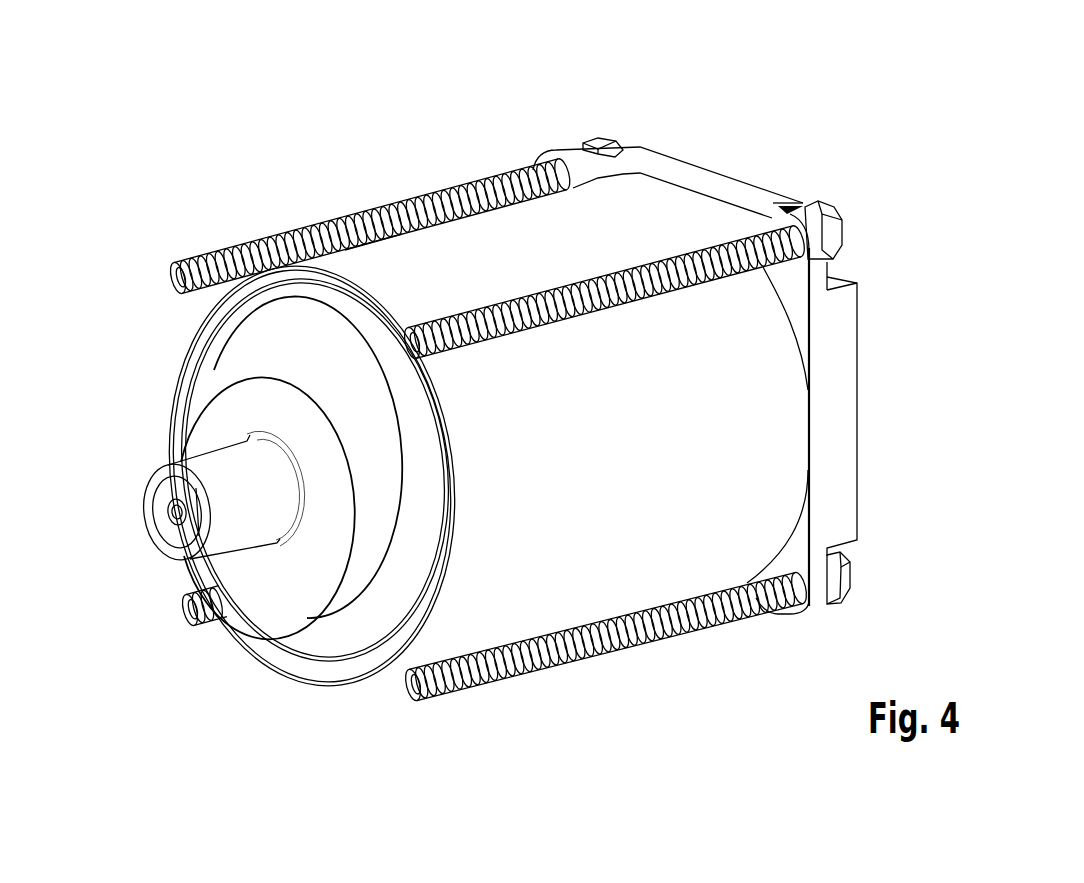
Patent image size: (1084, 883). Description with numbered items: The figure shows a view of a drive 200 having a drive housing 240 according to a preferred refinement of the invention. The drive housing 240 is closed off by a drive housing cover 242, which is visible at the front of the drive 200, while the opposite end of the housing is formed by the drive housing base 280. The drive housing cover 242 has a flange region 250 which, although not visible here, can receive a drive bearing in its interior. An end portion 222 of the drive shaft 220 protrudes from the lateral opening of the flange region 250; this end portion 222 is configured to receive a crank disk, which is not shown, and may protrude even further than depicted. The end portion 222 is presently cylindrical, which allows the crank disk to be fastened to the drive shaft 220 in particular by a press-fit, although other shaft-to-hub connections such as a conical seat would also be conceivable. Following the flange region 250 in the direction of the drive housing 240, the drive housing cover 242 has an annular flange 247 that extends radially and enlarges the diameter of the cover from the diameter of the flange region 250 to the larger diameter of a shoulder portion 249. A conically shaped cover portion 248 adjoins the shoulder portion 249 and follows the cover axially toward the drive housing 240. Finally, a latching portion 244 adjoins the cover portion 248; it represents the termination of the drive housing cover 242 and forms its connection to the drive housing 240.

The drive 200 is at (757, 82).
The drive shaft 220 is at (177, 527).
The end portion of the drive shaft 222 is at (142, 513).
The drive housing 240 is at (475, 147).
The drive housing cover 242 is at (132, 425).
The latching portion 244 is at (334, 666).
The annular flange 247 is at (293, 593).
The cover portion 248 is at (322, 332).
The shoulder portion 249 is at (290, 352).
The flange region 250 is at (215, 468).
The drive housing base 280 is at (874, 402).